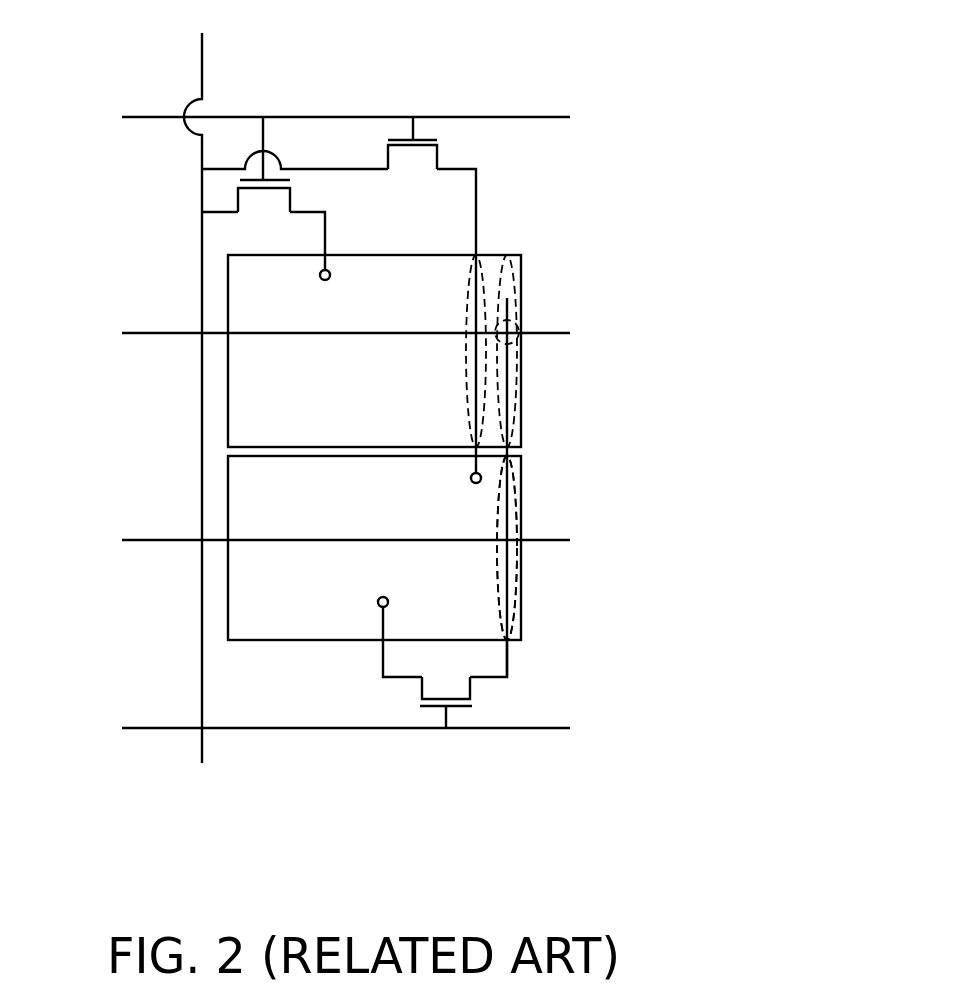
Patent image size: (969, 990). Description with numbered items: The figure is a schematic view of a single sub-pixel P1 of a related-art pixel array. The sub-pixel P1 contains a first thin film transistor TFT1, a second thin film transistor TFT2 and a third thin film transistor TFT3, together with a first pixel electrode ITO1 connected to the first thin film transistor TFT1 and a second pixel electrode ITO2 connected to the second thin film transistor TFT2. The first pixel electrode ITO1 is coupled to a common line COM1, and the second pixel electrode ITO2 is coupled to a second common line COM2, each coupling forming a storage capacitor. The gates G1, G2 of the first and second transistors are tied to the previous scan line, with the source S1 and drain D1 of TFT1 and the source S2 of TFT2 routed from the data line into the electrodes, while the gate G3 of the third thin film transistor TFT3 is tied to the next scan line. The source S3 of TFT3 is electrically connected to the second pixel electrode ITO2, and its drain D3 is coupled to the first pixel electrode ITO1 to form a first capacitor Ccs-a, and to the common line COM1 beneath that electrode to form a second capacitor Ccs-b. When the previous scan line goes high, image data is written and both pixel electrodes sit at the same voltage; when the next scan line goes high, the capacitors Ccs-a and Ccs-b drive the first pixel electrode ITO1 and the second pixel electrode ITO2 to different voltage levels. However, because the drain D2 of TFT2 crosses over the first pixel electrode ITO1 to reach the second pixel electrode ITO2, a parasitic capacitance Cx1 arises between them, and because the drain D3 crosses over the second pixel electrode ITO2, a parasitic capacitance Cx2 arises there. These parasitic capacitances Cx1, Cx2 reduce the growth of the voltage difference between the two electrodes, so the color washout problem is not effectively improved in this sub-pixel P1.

The common line COM1 is at (323, 335).
The common line COM2 is at (323, 543).
The gate of the first thin film transistor G1 is at (263, 130).
The source of first thin film transistor S1 is at (220, 212).
The drain of first thin film transistor D1 is at (326, 225).
The first thin film transistor TFT1 is at (264, 211).
The gate of the second thin film transistor G2 is at (413, 117).
The source of second thin film transistor S2 is at (329, 168).
The drain of the second thin film transistor D2 is at (477, 198).
The second thin film transistor TFT2 is at (412, 170).
The gate of the third thin film transistor G3 is at (447, 713).
The source of the third thin film transistor S3 is at (382, 662).
The drain of the third thin film transistor D3 is at (508, 662).
The third thin film transistor TFT3 is at (446, 680).
The first pixel electrode ITO1 is at (277, 385).
The second pixel electrode ITO2 is at (277, 580).
The parasitic capacitance Cx1 is at (463, 351).
The parasitic capacitance Cx2 is at (494, 548).
The first capacitor Ccs-a is at (512, 422).
The second capacitor Ccs-b is at (521, 313).
The sub-pixel P1 is at (590, 398).